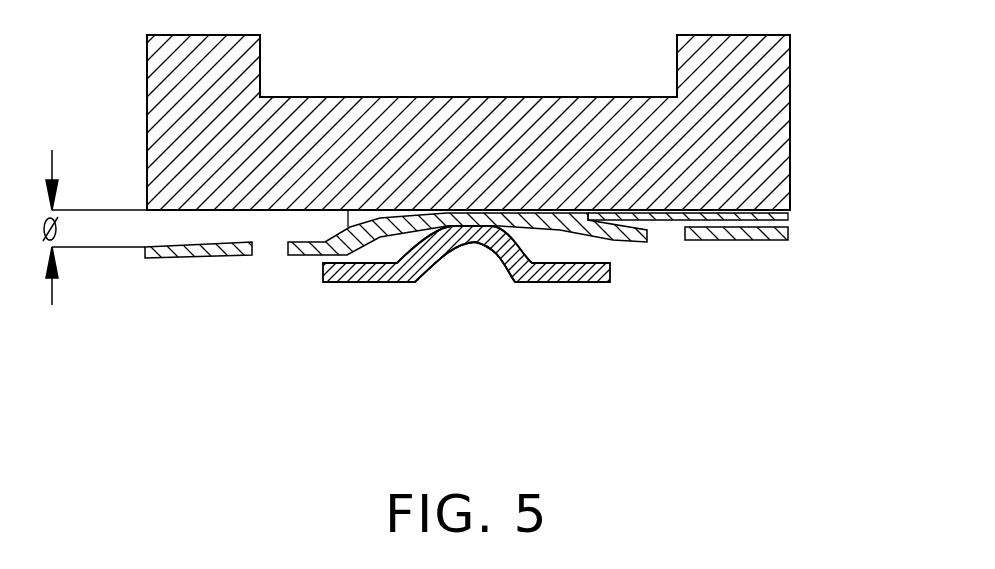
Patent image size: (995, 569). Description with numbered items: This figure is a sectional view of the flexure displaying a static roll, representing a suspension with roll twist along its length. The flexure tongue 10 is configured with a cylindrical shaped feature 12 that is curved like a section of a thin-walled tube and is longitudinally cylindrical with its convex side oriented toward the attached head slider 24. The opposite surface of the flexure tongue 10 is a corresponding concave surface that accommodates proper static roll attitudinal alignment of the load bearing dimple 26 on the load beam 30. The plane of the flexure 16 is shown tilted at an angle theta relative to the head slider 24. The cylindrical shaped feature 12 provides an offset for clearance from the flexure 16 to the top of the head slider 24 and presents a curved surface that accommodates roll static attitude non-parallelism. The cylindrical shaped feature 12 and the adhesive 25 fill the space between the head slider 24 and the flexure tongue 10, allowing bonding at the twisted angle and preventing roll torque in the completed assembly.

The head slider 24 is at (177, 138).
The adhesive 25 is at (735, 212).
The flexure 16 is at (788, 228).
The cylindrical shaped feature 12 is at (347, 249).
The flexure tongue 10 is at (648, 233).
The load beam 30 is at (377, 272).
The load bearing dimple 26 is at (478, 243).